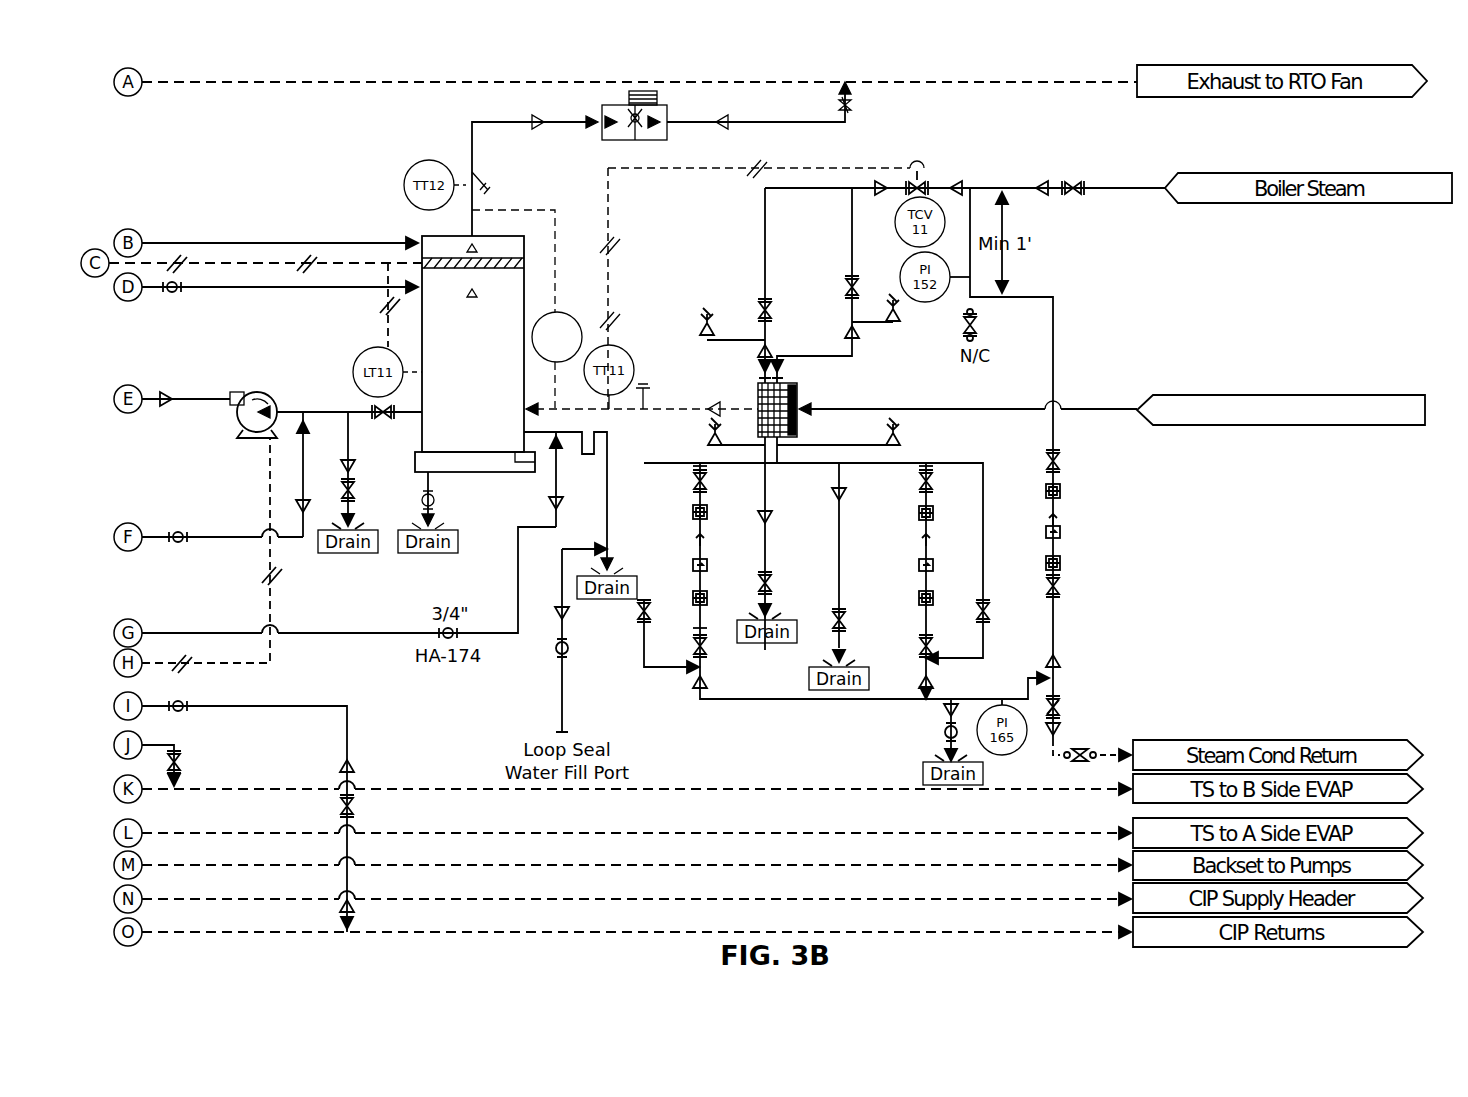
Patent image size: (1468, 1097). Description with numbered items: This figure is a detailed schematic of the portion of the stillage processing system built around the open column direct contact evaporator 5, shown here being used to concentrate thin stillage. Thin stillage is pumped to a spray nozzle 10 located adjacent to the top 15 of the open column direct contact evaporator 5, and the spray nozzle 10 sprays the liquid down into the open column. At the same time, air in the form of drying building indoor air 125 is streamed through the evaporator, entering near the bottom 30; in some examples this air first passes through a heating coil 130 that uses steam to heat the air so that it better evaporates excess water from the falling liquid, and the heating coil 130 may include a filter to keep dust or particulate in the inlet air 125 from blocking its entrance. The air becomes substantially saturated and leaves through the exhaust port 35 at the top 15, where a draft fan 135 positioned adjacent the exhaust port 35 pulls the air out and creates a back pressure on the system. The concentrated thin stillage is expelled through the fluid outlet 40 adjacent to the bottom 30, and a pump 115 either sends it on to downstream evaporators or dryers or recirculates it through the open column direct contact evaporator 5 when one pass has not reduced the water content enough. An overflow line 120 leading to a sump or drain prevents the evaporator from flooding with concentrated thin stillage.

The open column direct contact evaporator 5 is at (507, 282).
The spray nozzle 10 is at (425, 305).
The top 15 is at (433, 236).
The bottom 30 is at (473, 453).
The exhaust port 35 is at (472, 216).
The fluid outlet 40 is at (412, 412).
The pump 115 is at (258, 396).
The overflow line 120 is at (611, 452).
The drying building indoor air 125 is at (1076, 408).
The heating coil 130 is at (800, 396).
The draft fan 135 is at (663, 113).